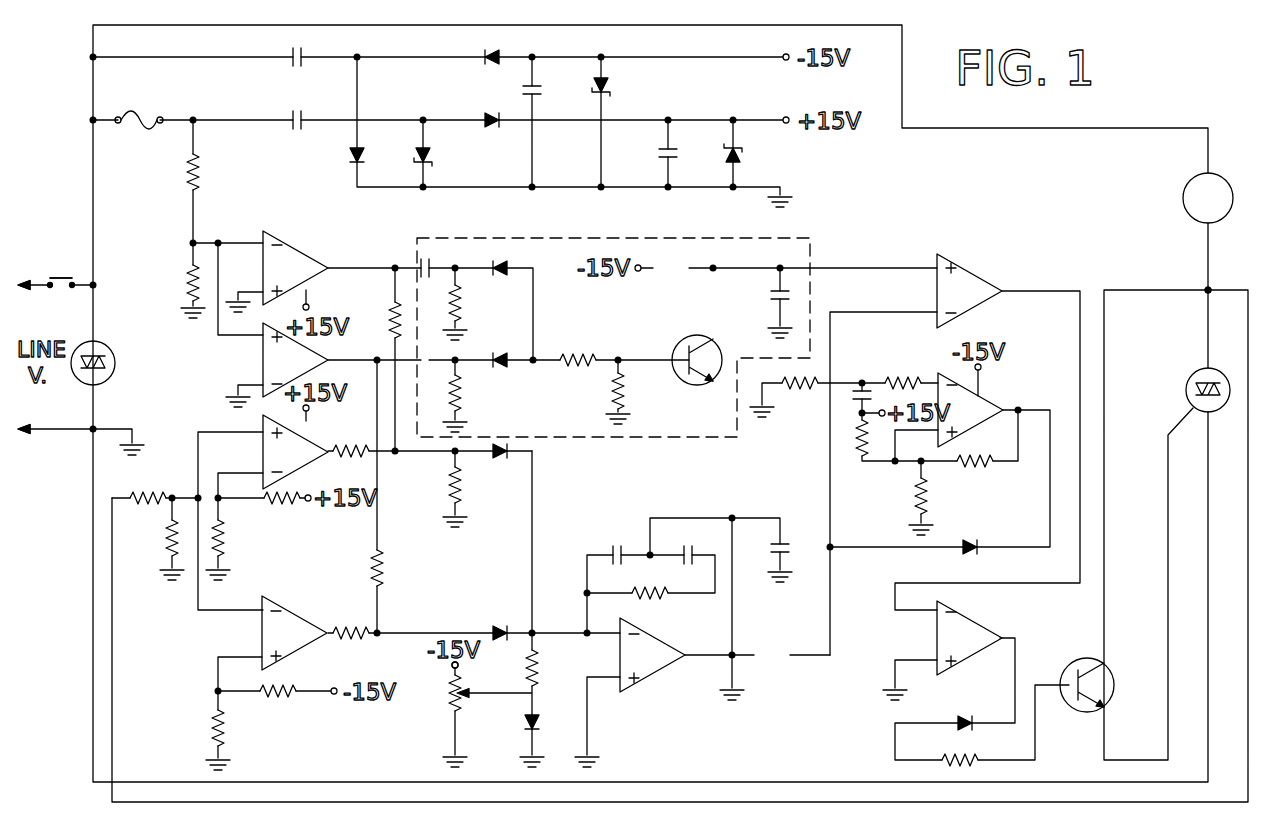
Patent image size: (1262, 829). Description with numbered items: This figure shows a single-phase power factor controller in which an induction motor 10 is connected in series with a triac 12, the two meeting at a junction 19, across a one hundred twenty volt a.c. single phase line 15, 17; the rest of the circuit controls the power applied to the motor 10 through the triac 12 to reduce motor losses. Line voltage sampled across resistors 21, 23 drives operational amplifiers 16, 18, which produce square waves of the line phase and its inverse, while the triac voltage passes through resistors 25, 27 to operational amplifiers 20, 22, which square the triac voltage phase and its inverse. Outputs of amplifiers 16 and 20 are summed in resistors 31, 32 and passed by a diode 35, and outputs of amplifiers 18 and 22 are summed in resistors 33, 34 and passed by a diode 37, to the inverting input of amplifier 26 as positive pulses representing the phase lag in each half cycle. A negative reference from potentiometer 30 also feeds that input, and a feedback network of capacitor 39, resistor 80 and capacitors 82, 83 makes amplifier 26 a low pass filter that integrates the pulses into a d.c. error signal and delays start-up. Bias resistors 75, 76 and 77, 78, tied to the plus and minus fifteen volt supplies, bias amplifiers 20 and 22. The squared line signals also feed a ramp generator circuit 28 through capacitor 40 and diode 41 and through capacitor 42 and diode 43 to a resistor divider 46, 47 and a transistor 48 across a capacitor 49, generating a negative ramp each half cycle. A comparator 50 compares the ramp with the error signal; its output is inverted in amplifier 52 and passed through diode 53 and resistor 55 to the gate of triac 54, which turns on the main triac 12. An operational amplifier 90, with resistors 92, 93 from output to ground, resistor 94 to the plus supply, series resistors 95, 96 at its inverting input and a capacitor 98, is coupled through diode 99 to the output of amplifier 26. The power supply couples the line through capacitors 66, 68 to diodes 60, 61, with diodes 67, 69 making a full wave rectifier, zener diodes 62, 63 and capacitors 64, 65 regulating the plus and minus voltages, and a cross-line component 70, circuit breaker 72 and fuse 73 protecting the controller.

The induction motor 10 is at (1184, 195).
The triac 12 is at (1188, 382).
The a.c. single phase line 15 is at (45, 288).
The operational amplifier 16 is at (290, 248).
The a.c. single phase line 17 is at (73, 428).
The operational amplifier 18 is at (262, 362).
The junction 19 is at (1206, 295).
The operational amplifier 20 is at (262, 450).
The resistor 21 is at (187, 172).
The operational amplifier 22 is at (261, 632).
The resistor 23 is at (186, 280).
The resistor 25 is at (140, 492).
The operational amplifier 26 is at (660, 680).
The resistor 27 is at (168, 533).
The ramp generator circuit 28 is at (572, 238).
The potentiometer 30 is at (448, 705).
The resistor 31 is at (389, 318).
The resistor 32 is at (345, 445).
The resistor 33 is at (384, 568).
The resistor 34 is at (350, 628).
The diode 35 is at (496, 460).
The diode 37 is at (500, 626).
The capacitor 39 is at (612, 550).
The capacitor 40 is at (436, 258).
The diode 41 is at (500, 278).
The capacitor 42 is at (424, 360).
The diode 43 is at (503, 372).
The resistor divider 46 is at (580, 356).
The resistor divider 47 is at (613, 392).
The transistor 48 is at (682, 345).
The capacitor 49 is at (770, 296).
The comparator 50 is at (962, 268).
The amplifier 52 is at (973, 628).
The diode 53 is at (965, 716).
The triac 54 is at (1085, 659).
The resistor 55 is at (980, 765).
The diode 60 is at (485, 116).
The diode 61 is at (484, 54).
The zener diode 62 is at (742, 159).
The zener diode 63 is at (610, 85).
The capacitor 64 is at (660, 153).
The capacitor 65 is at (539, 93).
The capacitor 66 is at (295, 114).
The diode 67 is at (416, 152).
The capacitor 68 is at (295, 53).
The diode 69 is at (350, 155).
The cross-line component 70 is at (113, 373).
The line current circuit breaker 72 is at (70, 276).
The fuse 73 is at (140, 110).
The bias resistor 75 is at (292, 504).
The bias resistor 76 is at (223, 535).
The bias resistor 77 is at (276, 698).
The bias resistor 78 is at (212, 720).
The resistor 80 is at (660, 600).
The capacitor 82 is at (692, 540).
The capacitor 83 is at (784, 542).
The operational amplifier 90 is at (992, 400).
The resistor 92 is at (976, 470).
The resistor 93 is at (915, 500).
The resistor 94 is at (858, 448).
The resistor 95 is at (898, 377).
The resistor 96 is at (802, 392).
The capacitor 98 is at (855, 388).
The diode 99 is at (976, 553).